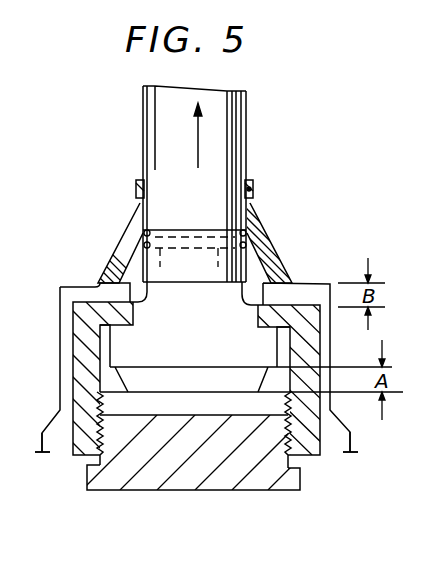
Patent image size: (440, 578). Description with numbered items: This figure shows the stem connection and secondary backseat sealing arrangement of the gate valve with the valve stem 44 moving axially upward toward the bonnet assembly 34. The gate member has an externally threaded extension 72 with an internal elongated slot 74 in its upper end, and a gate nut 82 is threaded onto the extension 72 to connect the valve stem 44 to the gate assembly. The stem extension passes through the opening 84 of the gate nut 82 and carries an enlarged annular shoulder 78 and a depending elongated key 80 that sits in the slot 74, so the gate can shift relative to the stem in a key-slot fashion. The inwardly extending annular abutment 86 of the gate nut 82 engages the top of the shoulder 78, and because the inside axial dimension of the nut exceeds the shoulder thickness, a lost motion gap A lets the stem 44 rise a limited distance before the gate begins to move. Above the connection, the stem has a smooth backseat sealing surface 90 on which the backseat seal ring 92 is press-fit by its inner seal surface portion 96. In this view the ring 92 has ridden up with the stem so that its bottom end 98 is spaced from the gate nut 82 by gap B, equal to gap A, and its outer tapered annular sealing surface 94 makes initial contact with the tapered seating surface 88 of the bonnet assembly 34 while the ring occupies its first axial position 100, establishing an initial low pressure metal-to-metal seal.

The bonnet assembly 34 is at (102, 196).
The valve stem 44 is at (215, 200).
The externally threaded extension 72 is at (258, 477).
The internal elongated slot 74 is at (110, 396).
The annular shoulder 78 is at (258, 348).
The elongated key 80 is at (203, 390).
The gate nut 82 is at (80, 432).
The opening 84 is at (118, 303).
The annular abutment 86 is at (110, 311).
The tapered seating surface 88 is at (252, 216).
The backseat sealing surface 90 is at (228, 276).
The backseat seal ring 92 is at (113, 257).
The outer tapered annular sealing surface 94 is at (272, 262).
The inner seal surface portion 96 is at (144, 233).
The bottom end 98 is at (60, 289).
The first axial position 100 is at (252, 234).